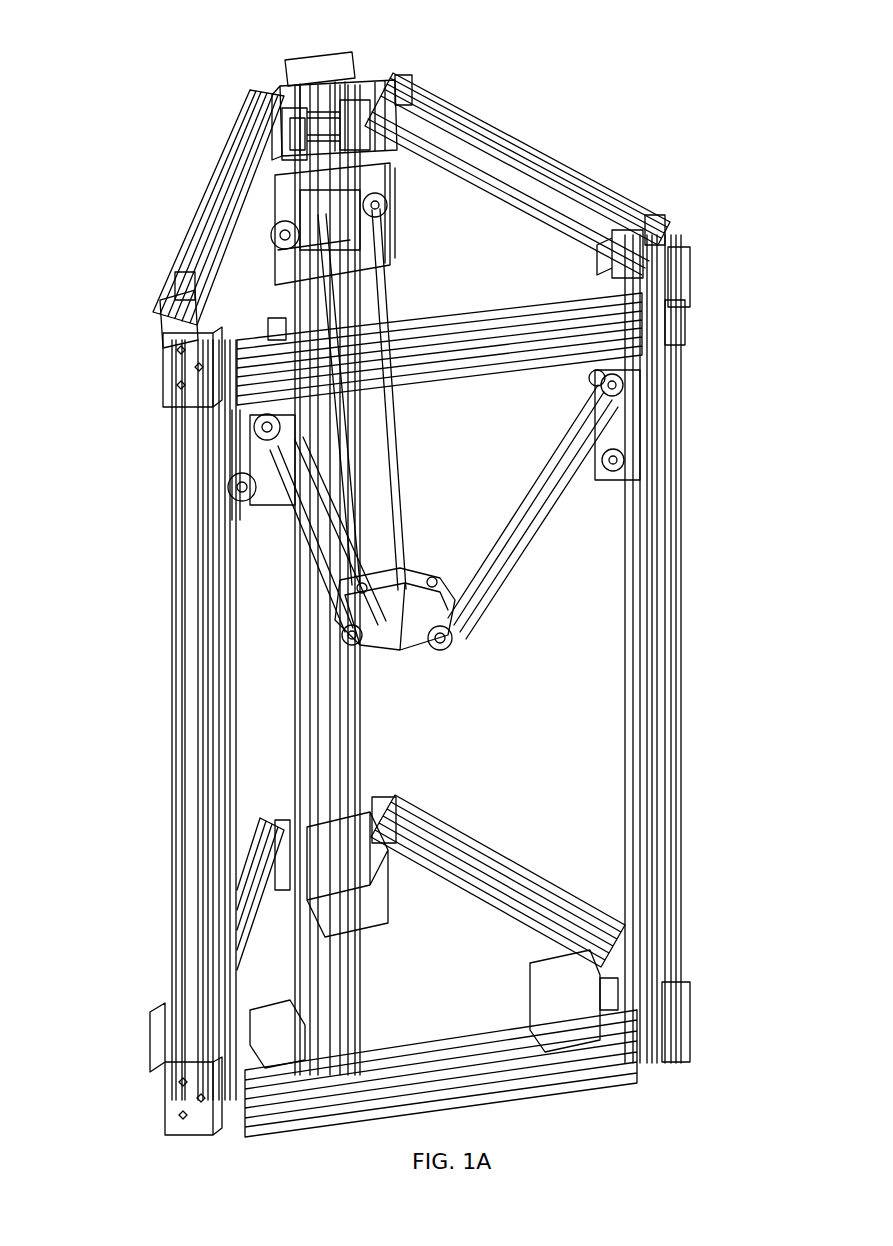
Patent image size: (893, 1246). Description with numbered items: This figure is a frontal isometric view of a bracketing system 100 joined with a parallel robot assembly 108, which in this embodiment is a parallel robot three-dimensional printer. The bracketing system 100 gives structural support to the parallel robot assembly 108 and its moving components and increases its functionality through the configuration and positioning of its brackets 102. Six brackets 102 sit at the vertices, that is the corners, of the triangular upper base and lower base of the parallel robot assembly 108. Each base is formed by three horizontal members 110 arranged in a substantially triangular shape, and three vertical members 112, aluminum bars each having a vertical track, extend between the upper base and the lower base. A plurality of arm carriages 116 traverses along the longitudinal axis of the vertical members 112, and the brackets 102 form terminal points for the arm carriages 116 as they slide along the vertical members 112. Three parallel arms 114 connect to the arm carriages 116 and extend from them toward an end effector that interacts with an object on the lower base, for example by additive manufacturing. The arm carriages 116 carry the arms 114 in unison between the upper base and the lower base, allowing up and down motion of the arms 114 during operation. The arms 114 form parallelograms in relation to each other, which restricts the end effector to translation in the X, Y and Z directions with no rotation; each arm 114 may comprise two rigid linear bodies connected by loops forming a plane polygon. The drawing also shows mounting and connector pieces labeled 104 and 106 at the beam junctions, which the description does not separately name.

The bracketing system 100 is at (98, 446).
The bracket 102 is at (332, 58).
The motor mount bracket 104 is at (333, 118).
The connector plate 106 is at (290, 135).
The parallel robot assembly 108 is at (514, 656).
The horizontal member 110 is at (222, 176).
The vertical member 112 is at (175, 702).
The arm 114 is at (410, 512).
The arm carriage 116 is at (395, 210).